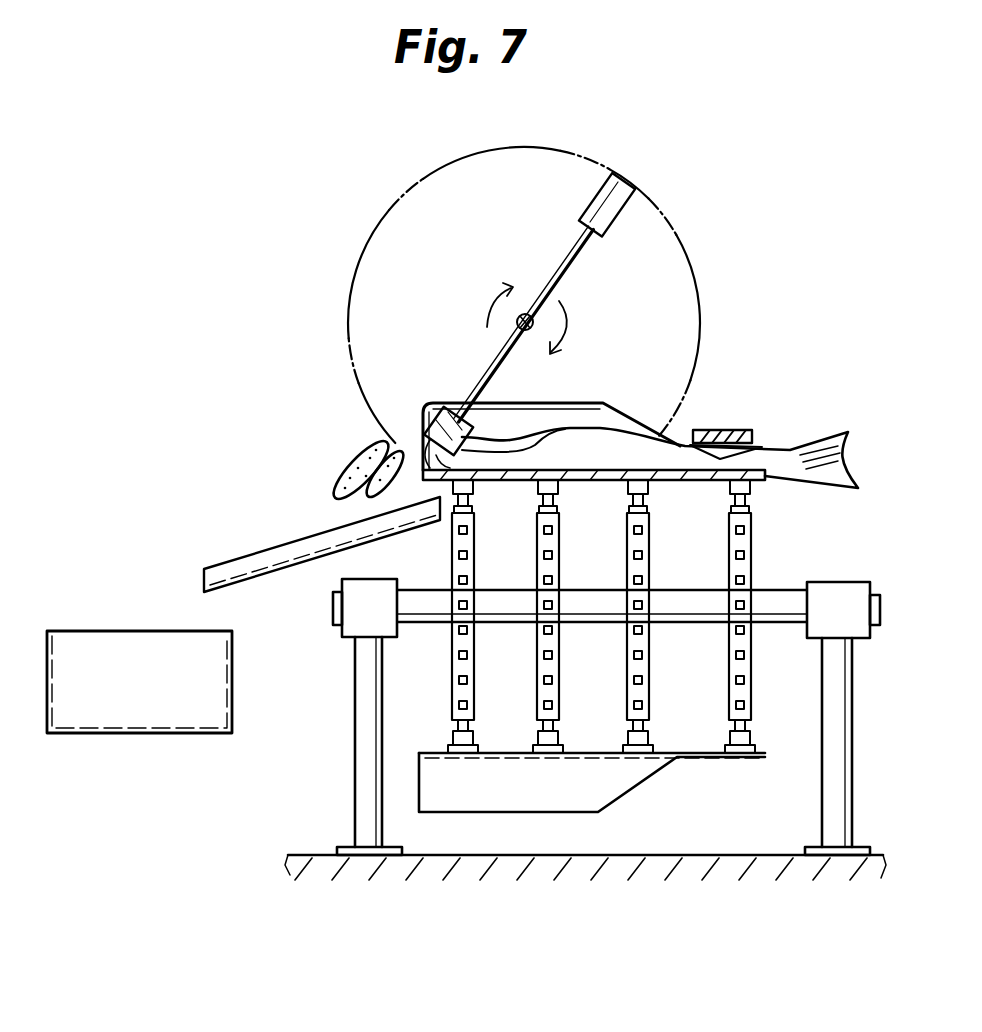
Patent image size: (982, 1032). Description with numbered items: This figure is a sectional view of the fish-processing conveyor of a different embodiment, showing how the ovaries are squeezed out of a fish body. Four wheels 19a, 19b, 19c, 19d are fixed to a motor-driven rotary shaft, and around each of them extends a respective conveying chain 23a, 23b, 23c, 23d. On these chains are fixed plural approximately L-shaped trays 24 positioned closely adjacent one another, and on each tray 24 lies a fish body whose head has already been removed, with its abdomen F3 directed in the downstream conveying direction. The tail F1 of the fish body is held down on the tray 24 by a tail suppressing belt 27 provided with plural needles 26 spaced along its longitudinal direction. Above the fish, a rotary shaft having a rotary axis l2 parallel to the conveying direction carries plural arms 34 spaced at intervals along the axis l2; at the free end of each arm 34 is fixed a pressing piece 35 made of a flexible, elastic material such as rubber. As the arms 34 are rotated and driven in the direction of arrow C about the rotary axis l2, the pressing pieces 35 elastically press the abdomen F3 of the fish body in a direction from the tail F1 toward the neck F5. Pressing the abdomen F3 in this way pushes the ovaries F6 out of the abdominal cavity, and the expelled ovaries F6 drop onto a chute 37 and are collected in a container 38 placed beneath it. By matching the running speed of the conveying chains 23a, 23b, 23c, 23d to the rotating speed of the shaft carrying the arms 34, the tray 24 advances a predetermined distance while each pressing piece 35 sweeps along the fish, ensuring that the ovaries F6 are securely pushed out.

The direction of arrow C is at (572, 331).
The rotary axis l2 is at (525, 313).
The arm 34 is at (492, 361).
The pressing piece 35 is at (455, 412).
The abdomen F3 is at (546, 468).
The tail F1 is at (805, 456).
The tail suppressing belt 27 is at (744, 431).
The needle 26 is at (760, 453).
The tray 24 is at (684, 470).
The neck F5 is at (436, 452).
The ovaries F6 is at (357, 462).
The chain 23a is at (474, 490).
The chain 23b is at (560, 490).
The chain 23c is at (650, 490).
The chain 23d is at (752, 490).
The wheel 19a is at (474, 569).
The wheel 19b is at (560, 569).
The wheel 19c is at (650, 569).
The wheel 19d is at (752, 569).
The chute 37 is at (286, 553).
The container 38 is at (234, 696).